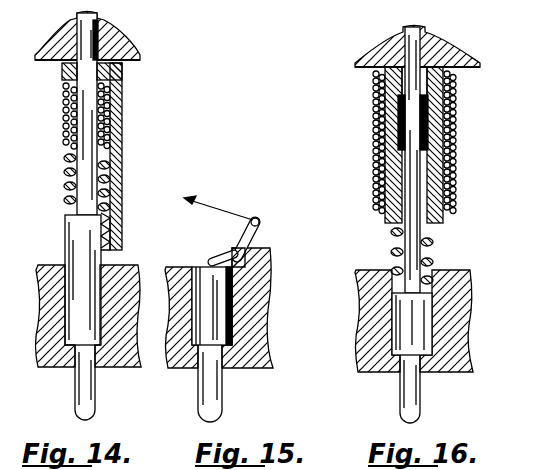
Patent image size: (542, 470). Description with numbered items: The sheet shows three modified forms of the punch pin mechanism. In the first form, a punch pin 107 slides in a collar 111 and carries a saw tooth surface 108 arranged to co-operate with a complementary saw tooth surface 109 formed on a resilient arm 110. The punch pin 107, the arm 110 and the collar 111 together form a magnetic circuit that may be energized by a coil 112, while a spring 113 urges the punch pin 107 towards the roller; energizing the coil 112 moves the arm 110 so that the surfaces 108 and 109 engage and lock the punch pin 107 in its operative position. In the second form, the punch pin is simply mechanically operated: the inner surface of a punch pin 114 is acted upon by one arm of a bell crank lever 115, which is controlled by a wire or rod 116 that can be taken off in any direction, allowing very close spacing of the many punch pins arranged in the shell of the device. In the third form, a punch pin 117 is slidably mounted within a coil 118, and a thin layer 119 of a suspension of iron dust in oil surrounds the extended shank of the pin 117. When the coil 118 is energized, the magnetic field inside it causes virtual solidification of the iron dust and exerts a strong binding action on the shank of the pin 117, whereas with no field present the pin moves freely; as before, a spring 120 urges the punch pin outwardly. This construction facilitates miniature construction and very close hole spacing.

In FIG. 14, the punch pin 107 is at (78, 243).
In FIG. 14, the saw tooth surface 108 is at (113, 222).
In FIG. 14, the complementary saw tooth surface 109 is at (118, 241).
In FIG. 14, the resilient arm 110 is at (112, 136).
In FIG. 14, the collar 111 is at (100, 78).
In FIG. 14, the coil 112 is at (63, 116).
In FIG. 14, the spring 113 is at (66, 190).
In FIG. 15, the punch pin 114 is at (216, 300).
In FIG. 15, the bell crank lever 115 is at (259, 233).
In FIG. 15, the wire or rod 116 is at (237, 212).
In FIG. 16, the punch pin 117 is at (404, 315).
In FIG. 16, the coil 118 is at (375, 144).
In FIG. 16, the thin layer of iron dust suspension in oil 119 is at (400, 110).
In FIG. 16, the spring 120 is at (391, 250).